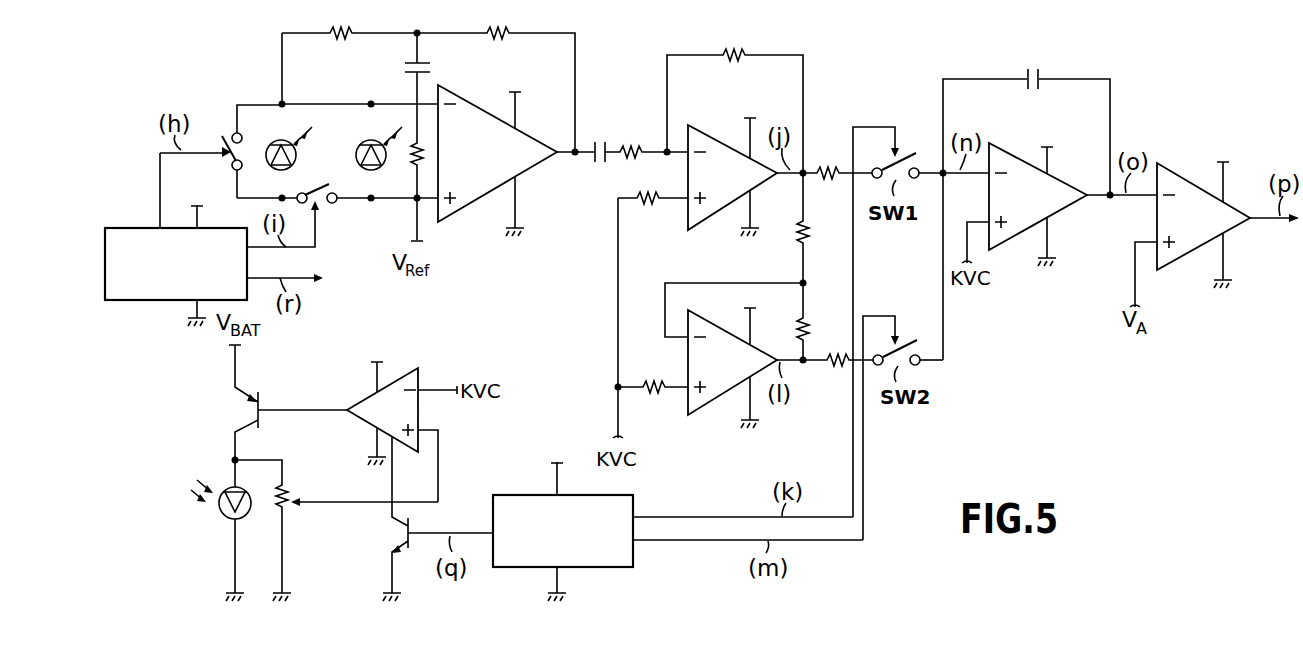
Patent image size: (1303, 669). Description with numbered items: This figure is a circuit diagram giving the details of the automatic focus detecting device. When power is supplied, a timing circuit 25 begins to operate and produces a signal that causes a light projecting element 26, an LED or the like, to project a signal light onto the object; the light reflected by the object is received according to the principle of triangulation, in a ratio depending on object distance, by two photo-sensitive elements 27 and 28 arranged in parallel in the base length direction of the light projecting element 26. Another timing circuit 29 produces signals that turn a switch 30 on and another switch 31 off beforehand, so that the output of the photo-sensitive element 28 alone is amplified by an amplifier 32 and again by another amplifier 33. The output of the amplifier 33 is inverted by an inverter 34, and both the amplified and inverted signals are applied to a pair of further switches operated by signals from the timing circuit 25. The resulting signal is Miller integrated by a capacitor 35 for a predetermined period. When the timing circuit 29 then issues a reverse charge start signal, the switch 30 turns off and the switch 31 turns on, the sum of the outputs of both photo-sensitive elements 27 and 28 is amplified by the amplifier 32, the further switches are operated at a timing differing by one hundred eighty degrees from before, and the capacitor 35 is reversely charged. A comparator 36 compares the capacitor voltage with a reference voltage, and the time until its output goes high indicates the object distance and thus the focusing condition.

The timing circuit 25 is at (518, 494).
The light projecting element 26 is at (228, 517).
The photo-sensitive element 27 is at (270, 147).
The photo-sensitive element 28 is at (355, 147).
The timing circuit 29 is at (138, 300).
The switch 30 is at (230, 164).
The switch 31 is at (318, 190).
The amplifier 32 is at (470, 90).
The amplifier 33 is at (700, 123).
The inverter 34 is at (714, 412).
The capacitor 35 is at (1034, 90).
The comparator 36 is at (1180, 163).